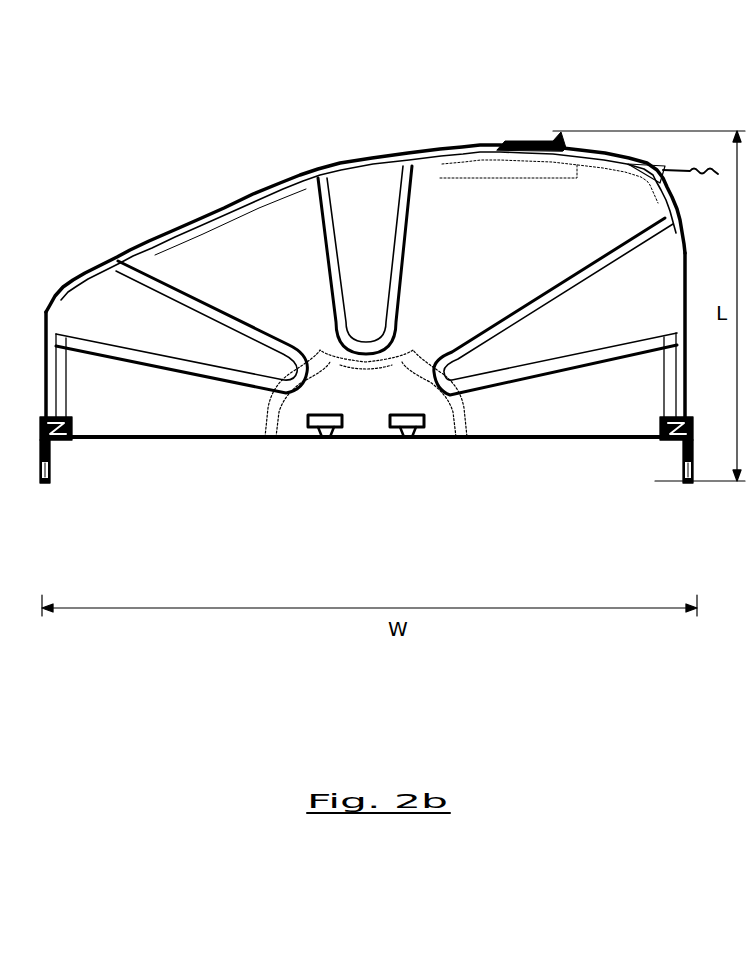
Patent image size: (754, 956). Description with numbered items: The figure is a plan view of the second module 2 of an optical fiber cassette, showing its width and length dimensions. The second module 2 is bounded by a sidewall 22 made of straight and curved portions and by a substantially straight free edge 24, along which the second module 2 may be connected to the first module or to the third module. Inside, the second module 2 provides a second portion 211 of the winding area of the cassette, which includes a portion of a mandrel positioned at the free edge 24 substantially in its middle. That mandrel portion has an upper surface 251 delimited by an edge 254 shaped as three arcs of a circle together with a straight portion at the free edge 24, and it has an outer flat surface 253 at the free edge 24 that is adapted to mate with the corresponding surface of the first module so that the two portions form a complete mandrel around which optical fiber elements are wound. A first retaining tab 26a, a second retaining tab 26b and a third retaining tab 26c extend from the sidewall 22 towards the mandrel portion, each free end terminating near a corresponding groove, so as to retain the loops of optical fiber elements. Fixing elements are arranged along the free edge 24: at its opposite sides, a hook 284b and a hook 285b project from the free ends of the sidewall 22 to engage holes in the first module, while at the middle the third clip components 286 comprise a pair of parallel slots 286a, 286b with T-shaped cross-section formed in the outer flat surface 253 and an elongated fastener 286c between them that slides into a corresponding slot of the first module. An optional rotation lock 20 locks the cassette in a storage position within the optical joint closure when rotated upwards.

The second module 2 is at (226, 143).
The rotation lock 20 is at (529, 120).
The sidewall 22 is at (115, 256).
The second portion of the winding area 211 is at (284, 284).
The first retaining tab 26a is at (166, 340).
The second retaining tab 26b is at (576, 342).
The third retaining tab 26c is at (387, 254).
The edge 254 is at (408, 345).
The upper surface 251 is at (380, 407).
The free edge 24 is at (219, 440).
The third clip components 286 is at (376, 505).
The elongated slot 286a is at (321, 440).
The elongated slot 286b is at (408, 440).
The elongated fastener 286c is at (362, 440).
The outer flat surface 253 is at (443, 440).
The hook 284b is at (52, 486).
The hook 285b is at (686, 486).